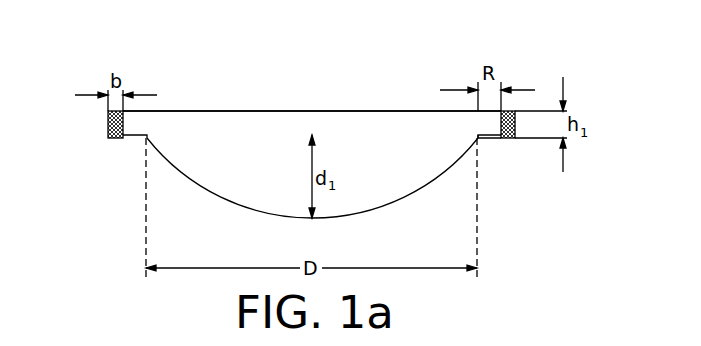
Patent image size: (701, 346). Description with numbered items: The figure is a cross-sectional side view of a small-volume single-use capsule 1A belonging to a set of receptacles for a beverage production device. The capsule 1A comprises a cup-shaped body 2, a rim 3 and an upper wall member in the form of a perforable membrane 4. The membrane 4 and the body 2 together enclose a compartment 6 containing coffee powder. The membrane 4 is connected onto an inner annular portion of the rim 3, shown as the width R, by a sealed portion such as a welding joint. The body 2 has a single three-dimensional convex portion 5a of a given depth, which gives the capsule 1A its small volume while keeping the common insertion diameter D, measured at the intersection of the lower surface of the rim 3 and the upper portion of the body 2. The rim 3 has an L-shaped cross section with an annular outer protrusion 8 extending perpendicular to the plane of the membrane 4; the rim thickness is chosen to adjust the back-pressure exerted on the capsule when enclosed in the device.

The capsule 1A is at (94, 74).
The cup-shaped body 2 is at (412, 193).
The rim 3 is at (495, 138).
The perforable membrane 4 is at (402, 133).
The convex portion 5a is at (227, 200).
The compartment 6 is at (233, 143).
The annular outer protrusion 8 is at (517, 128).